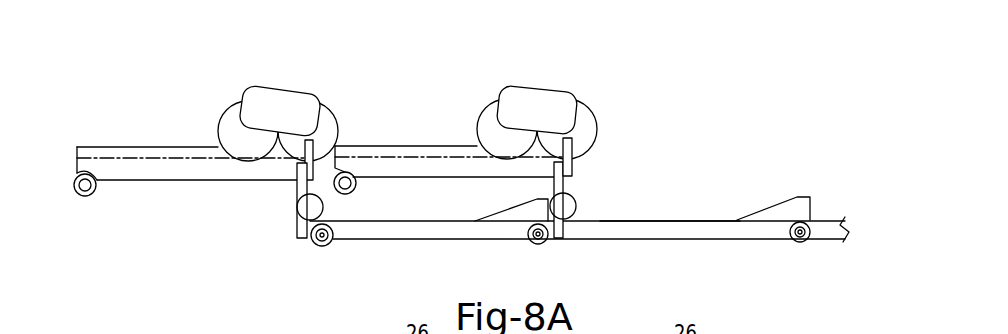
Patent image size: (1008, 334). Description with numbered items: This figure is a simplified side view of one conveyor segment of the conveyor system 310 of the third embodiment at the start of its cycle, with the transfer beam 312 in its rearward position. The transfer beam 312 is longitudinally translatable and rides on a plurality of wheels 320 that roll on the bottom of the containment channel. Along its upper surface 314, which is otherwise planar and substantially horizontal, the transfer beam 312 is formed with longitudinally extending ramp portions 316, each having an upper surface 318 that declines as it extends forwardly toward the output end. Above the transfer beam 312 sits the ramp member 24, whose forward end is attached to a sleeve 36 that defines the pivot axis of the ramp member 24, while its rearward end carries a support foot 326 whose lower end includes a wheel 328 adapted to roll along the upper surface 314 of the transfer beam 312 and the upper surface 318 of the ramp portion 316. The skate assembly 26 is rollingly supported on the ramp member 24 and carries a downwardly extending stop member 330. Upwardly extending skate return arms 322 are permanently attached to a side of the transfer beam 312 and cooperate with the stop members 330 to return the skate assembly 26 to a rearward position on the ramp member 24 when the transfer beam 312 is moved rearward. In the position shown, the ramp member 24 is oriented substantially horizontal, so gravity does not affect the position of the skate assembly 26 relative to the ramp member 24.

The conveyor system 310 is at (102, 86).
The ramp member 24 is at (128, 158).
The skate assembly 26 is at (283, 113).
The sleeve 36 is at (87, 197).
The stop member 330 is at (315, 175).
The skate return arm 322 is at (297, 226).
The wheel 320 is at (325, 247).
The transfer beam 312 is at (769, 230).
The upper surface 314 is at (678, 219).
The upper surface of ramp portion 318 is at (510, 217).
The ramp portion 316 is at (783, 212).
The support foot 326 is at (568, 192).
The wheel 328 is at (566, 221).